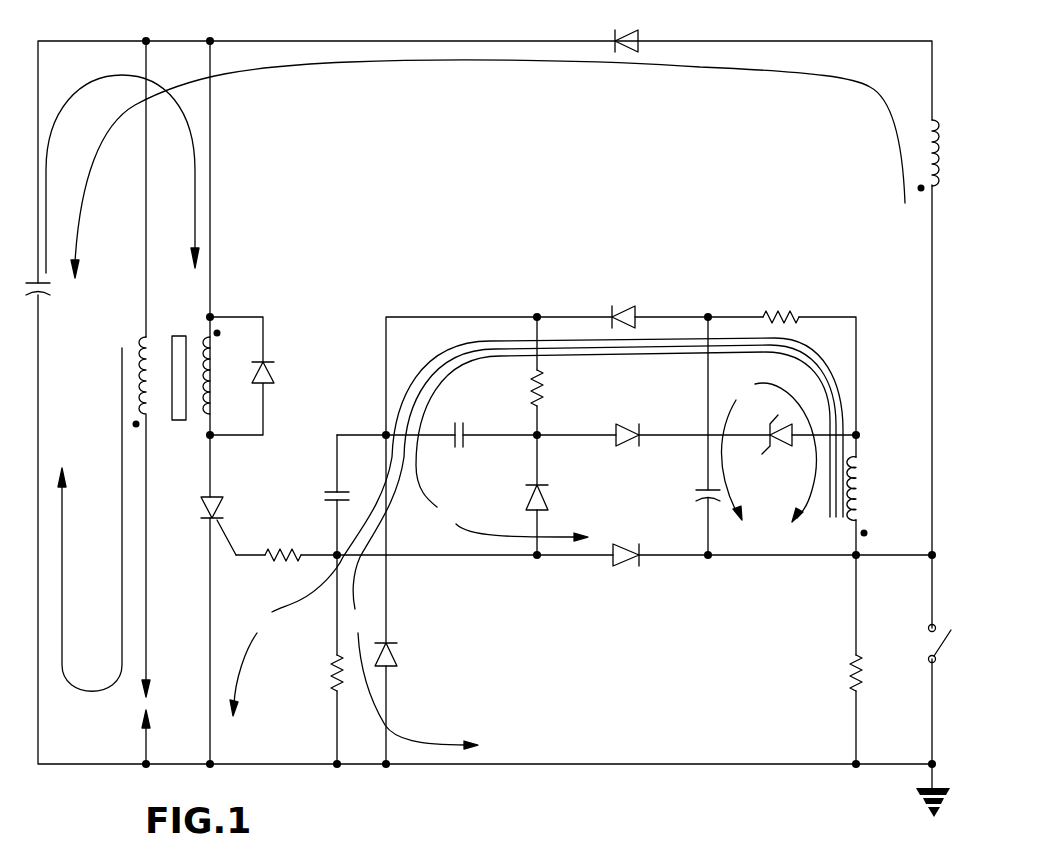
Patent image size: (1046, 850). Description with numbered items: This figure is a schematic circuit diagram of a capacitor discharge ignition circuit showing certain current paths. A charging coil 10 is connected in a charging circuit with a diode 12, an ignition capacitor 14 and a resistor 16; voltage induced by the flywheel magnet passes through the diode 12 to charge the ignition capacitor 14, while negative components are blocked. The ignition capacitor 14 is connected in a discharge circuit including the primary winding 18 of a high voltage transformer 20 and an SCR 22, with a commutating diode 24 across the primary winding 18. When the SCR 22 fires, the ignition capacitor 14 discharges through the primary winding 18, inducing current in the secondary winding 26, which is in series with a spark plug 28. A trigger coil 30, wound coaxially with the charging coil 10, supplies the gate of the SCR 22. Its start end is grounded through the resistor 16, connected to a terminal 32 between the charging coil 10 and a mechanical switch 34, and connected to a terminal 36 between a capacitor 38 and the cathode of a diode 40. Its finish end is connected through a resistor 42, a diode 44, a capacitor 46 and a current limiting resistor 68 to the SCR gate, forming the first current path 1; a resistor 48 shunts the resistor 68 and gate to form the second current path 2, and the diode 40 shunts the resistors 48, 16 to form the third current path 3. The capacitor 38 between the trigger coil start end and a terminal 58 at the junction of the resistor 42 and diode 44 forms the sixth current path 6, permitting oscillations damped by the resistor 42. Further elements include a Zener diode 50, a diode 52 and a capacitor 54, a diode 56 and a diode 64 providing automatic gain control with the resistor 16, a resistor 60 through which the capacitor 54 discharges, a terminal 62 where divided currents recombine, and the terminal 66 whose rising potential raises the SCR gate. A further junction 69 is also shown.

The charging coil 10 is at (929, 121).
The diode 12 is at (639, 32).
The ignition capacitor 14 is at (44, 296).
The resistor 16 is at (856, 658).
The primary winding 18 is at (216, 397).
The high voltage transformer 20 is at (188, 324).
The SCR 22 is at (200, 505).
The commutating diode 24 is at (275, 374).
The secondary winding 26 is at (152, 420).
The spark plug 28 is at (143, 708).
The trigger coil 30 is at (866, 480).
The terminal 32 is at (930, 557).
The mechanical switch 34 is at (929, 655).
The terminal 36 is at (708, 558).
The capacitor 38 is at (698, 492).
The diode 40 is at (628, 566).
The resistor 42 is at (785, 312).
The diode 44 is at (636, 307).
The capacitor 46 is at (333, 491).
The resistor 48 is at (332, 678).
The Zener diode 50 is at (790, 448).
The diode 52 is at (628, 423).
The capacitor 54 is at (466, 428).
The diode 56 is at (398, 657).
The terminal 58 is at (708, 315).
The resistor 60 is at (545, 378).
The terminal 62 is at (541, 434).
The diode 64 is at (548, 494).
The terminal 66 is at (336, 554).
The current limiting resistor 68 is at (280, 553).
The junction 69 is at (384, 434).
The first current path 1 is at (263, 621).
The second current path 2 is at (357, 621).
The third current path 3 is at (445, 517).
The sixth current path 6 is at (768, 451).